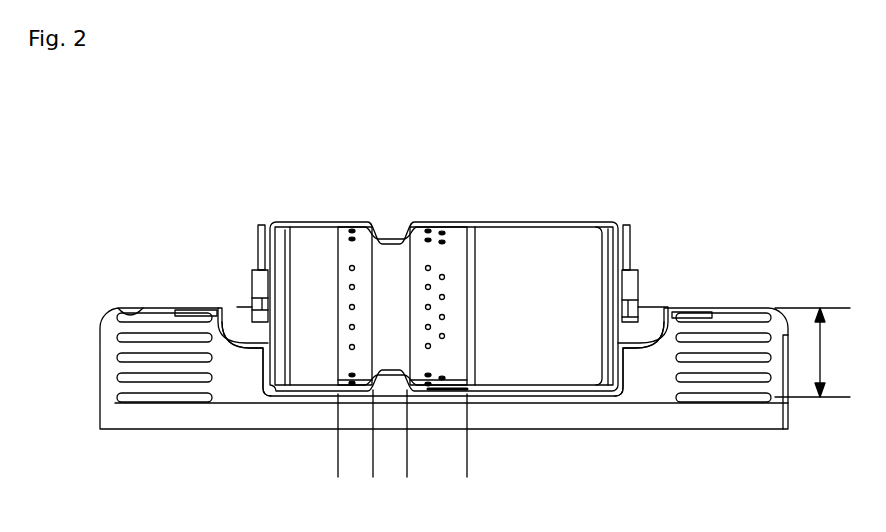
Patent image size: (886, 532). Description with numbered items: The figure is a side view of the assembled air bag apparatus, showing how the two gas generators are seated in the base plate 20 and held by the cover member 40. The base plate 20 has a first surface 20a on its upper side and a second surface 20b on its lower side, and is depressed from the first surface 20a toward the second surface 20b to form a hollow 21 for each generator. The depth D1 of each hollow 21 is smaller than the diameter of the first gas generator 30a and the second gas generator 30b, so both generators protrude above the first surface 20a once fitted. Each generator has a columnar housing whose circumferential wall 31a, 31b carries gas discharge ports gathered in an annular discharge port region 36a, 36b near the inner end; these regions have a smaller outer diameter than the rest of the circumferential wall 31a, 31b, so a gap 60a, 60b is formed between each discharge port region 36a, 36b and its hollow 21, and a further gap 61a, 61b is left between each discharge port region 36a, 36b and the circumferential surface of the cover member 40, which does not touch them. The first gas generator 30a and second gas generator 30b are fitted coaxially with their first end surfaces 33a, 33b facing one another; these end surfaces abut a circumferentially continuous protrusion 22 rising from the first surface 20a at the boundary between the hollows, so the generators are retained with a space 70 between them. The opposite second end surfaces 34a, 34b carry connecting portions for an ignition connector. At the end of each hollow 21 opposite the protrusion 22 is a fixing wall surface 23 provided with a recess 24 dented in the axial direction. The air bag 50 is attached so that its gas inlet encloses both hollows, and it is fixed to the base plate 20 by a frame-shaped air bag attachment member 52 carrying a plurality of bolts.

The base plate 20 is at (790, 414).
The first surface 20a is at (723, 307).
The second surface 20b is at (122, 308).
The hollow 21 is at (553, 403).
The protrusion 22 is at (383, 391).
The fixing wall surface 23 is at (273, 367).
The recess 24 is at (236, 317).
The first gas generator 30a is at (555, 247).
The second gas generator 30b is at (307, 252).
The circumferential wall 31a is at (528, 235).
The circumferential wall 31b is at (306, 237).
The first end surface 33a is at (407, 242).
The first end surface 33b is at (390, 242).
The second end surface 34a is at (632, 262).
The second end surface 34b is at (260, 245).
The annular discharge port region 36a is at (467, 467).
The annular discharge port region 36b is at (373, 467).
The cover member 40 is at (485, 222).
The air bag 50 is at (150, 403).
The air bag attachment member 52 is at (192, 316).
The gap 60a is at (427, 393).
The gap 60b is at (352, 392).
The gap 61a is at (440, 227).
The gap 61b is at (352, 225).
The space 70 is at (398, 316).
The depth of the hollows D1 is at (818, 352).